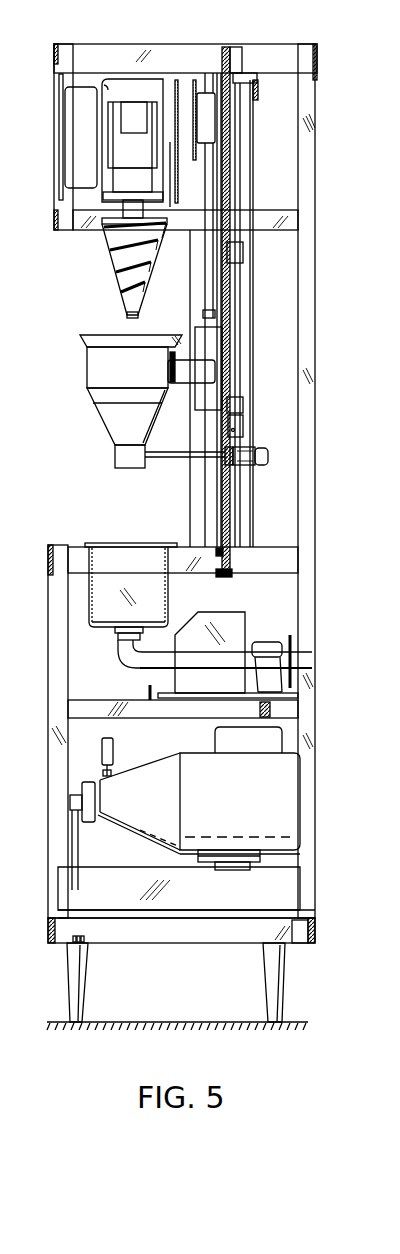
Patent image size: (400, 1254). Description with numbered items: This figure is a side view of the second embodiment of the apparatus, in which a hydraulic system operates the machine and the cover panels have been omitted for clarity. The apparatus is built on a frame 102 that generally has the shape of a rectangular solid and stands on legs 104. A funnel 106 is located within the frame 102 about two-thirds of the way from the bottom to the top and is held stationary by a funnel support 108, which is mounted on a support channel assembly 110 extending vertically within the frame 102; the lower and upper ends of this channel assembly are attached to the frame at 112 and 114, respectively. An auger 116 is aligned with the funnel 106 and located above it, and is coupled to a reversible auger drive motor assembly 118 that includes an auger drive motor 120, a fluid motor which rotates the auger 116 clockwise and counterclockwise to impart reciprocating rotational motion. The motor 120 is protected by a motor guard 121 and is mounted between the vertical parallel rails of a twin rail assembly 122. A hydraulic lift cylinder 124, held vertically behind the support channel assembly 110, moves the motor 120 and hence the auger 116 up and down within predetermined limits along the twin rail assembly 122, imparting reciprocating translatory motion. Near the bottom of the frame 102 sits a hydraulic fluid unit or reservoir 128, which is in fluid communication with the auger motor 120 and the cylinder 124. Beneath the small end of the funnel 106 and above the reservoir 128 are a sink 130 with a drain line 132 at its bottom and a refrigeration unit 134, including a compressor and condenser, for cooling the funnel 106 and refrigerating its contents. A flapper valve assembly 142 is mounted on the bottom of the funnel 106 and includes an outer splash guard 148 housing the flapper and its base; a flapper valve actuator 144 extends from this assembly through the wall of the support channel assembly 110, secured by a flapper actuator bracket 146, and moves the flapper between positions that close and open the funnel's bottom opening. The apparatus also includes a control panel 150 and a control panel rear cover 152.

The frame 102 is at (325, 216).
The legs 104 is at (72, 973).
The funnel 106 is at (80, 366).
The funnel support 108 is at (207, 370).
The support channel assembly 110 is at (223, 508).
The lower attachment of support channel assembly 112 is at (225, 563).
The upper attachment of support channel assembly 114 is at (231, 63).
The auger 116 is at (120, 255).
The reversible auger drive motor assembly 118 is at (130, 82).
The auger drive motor 120 is at (137, 112).
The motor guard 121 is at (108, 83).
The twin rail assembly 122 is at (208, 183).
The hydraulic lift cylinder 124 is at (237, 292).
The hydraulic fluid unit or reservoir 128 is at (252, 798).
The sink 130 is at (113, 557).
The drain line 132 is at (134, 652).
The refrigeration unit 134 is at (272, 647).
The flapper valve assembly 142 is at (125, 480).
The flapper valve actuator 144 is at (252, 450).
The flapper actuator bracket 146 is at (263, 465).
The outer splash guard 148 is at (113, 453).
The control panel 150 is at (59, 124).
The control panel rear cover 152 is at (78, 155).